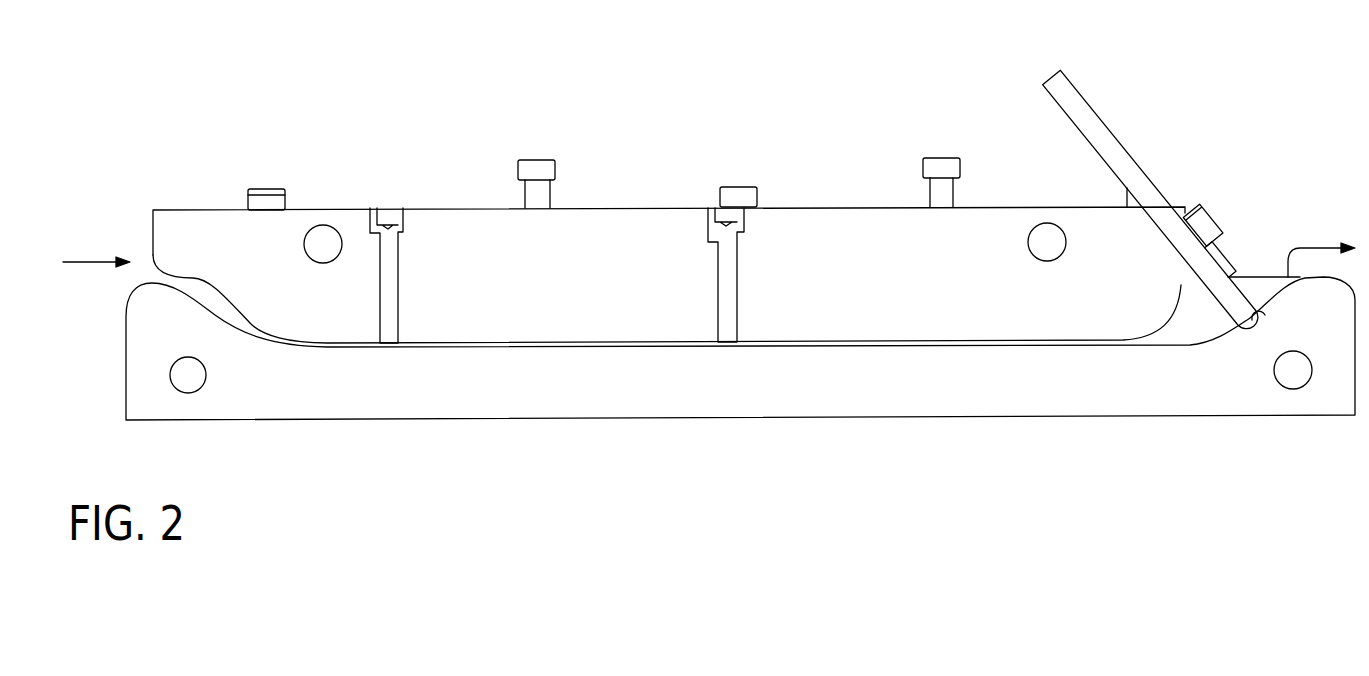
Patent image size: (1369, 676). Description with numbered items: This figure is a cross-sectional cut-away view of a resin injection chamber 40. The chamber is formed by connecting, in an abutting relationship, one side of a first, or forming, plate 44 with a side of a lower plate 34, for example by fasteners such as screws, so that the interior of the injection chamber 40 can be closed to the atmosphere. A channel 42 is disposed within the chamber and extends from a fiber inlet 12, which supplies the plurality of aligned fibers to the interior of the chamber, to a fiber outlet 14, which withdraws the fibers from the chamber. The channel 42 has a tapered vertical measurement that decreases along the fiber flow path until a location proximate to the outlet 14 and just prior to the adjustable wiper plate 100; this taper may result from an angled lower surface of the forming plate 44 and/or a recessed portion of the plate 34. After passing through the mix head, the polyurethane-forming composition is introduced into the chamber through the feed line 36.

The fiber inlet 12 is at (88, 262).
The fiber outlet 14 is at (1315, 248).
The lower plate 34 is at (876, 395).
The feed line 36 is at (398, 245).
The resin injection chamber 40 is at (588, 143).
The channel 42 is at (245, 332).
The forming plate 44 is at (876, 290).
The adjustable wiper plate 100 is at (1133, 157).